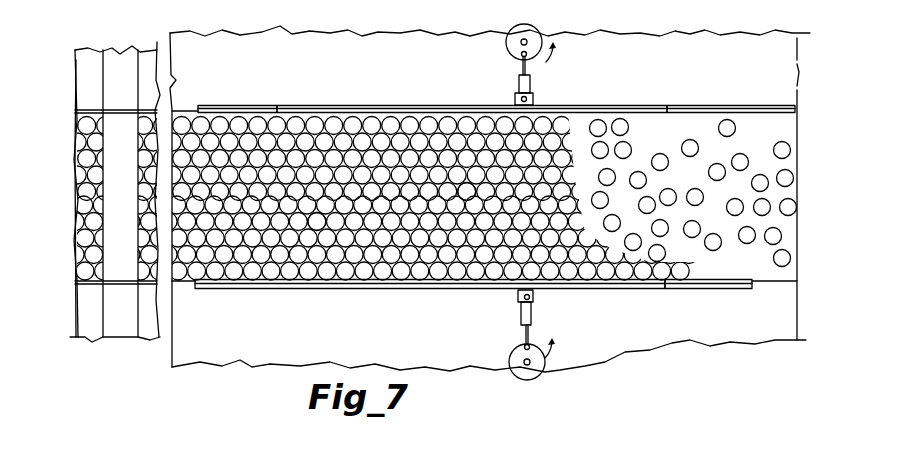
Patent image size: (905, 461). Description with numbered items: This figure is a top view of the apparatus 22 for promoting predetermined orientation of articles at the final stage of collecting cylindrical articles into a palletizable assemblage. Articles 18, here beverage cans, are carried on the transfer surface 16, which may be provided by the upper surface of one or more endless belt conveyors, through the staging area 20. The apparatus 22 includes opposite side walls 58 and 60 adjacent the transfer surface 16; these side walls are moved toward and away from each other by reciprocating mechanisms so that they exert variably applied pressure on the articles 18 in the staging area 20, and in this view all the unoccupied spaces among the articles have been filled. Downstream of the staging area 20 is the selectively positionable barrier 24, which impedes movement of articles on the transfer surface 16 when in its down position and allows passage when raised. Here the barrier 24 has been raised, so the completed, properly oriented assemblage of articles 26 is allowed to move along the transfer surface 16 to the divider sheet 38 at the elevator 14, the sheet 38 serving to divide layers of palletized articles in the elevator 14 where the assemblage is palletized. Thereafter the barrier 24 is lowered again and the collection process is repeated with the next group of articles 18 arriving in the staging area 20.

The elevator 14 is at (85, 323).
The transfer surface 16 is at (750, 125).
The articles 18 is at (348, 155).
The staging area 20 is at (460, 175).
The apparatus for promoting predetermined orientation of articles 22 is at (222, 377).
The selectively positionable barrier 24 is at (115, 65).
The assemblage of articles 26 is at (314, 225).
The divider sheet 38 is at (68, 250).
The side wall 58 is at (447, 290).
The side wall 60 is at (293, 110).